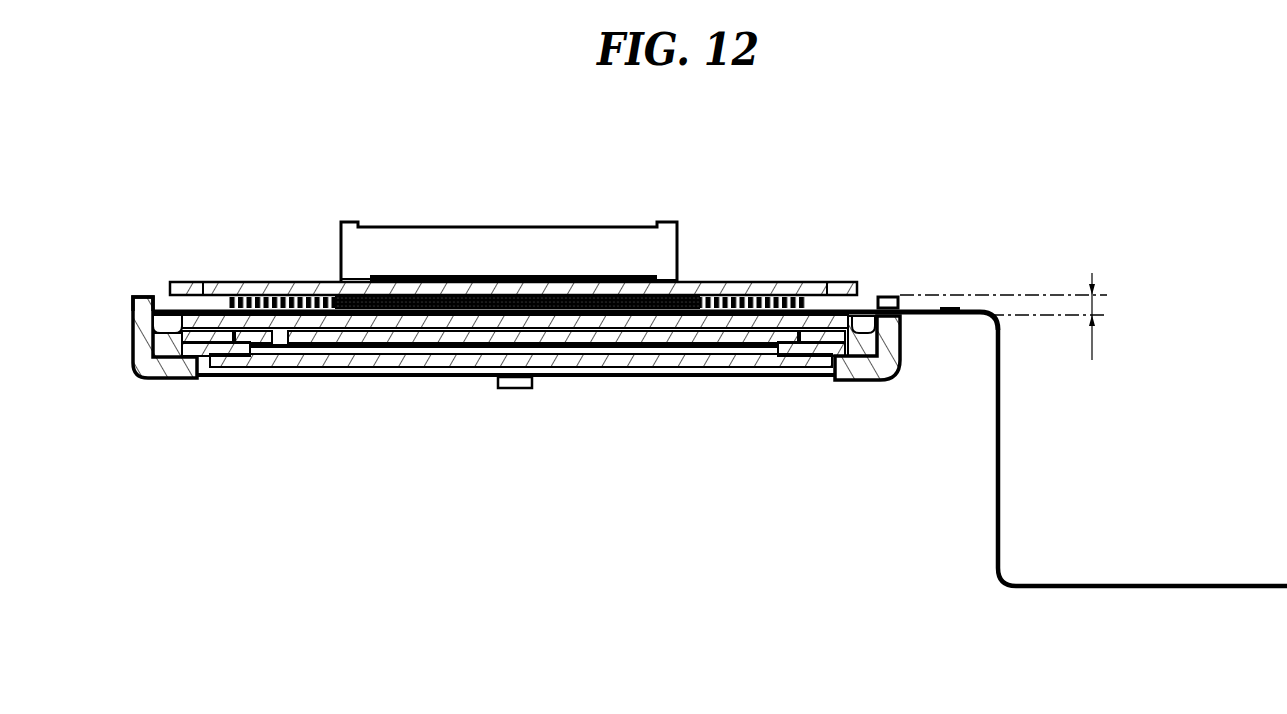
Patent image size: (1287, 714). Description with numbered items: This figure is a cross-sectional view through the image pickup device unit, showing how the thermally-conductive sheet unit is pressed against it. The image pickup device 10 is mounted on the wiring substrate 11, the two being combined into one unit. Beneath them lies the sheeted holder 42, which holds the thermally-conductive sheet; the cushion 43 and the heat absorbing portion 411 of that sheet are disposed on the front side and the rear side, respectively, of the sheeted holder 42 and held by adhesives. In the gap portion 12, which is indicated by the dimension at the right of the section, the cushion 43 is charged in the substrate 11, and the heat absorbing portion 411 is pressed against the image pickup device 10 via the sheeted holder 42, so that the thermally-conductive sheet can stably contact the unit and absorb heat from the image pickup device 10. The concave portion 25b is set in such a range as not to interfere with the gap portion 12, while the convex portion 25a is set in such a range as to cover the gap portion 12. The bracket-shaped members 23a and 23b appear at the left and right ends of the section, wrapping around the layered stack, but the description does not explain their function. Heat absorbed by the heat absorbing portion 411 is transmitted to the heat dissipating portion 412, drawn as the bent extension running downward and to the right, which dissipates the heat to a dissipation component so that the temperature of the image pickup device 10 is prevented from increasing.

The image pickup device 10 is at (382, 340).
The wiring substrate 11 is at (740, 283).
The gap portion 12 is at (1090, 327).
The left frame bracket 23a is at (140, 333).
The right frame bracket 23b is at (893, 332).
The convex portion 25a is at (143, 297).
The concave portion 25b is at (890, 297).
The sheeted holder 42 is at (943, 307).
The cushion 43 is at (423, 275).
The heat absorbing portion 411 is at (587, 318).
The heat dissipating portion 412 is at (1080, 590).